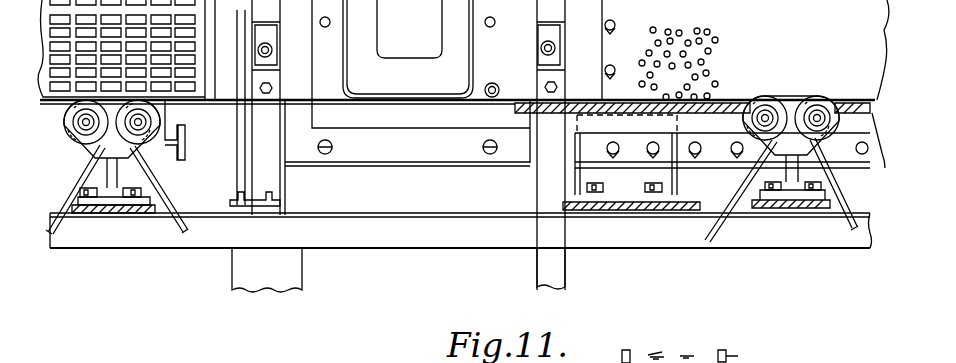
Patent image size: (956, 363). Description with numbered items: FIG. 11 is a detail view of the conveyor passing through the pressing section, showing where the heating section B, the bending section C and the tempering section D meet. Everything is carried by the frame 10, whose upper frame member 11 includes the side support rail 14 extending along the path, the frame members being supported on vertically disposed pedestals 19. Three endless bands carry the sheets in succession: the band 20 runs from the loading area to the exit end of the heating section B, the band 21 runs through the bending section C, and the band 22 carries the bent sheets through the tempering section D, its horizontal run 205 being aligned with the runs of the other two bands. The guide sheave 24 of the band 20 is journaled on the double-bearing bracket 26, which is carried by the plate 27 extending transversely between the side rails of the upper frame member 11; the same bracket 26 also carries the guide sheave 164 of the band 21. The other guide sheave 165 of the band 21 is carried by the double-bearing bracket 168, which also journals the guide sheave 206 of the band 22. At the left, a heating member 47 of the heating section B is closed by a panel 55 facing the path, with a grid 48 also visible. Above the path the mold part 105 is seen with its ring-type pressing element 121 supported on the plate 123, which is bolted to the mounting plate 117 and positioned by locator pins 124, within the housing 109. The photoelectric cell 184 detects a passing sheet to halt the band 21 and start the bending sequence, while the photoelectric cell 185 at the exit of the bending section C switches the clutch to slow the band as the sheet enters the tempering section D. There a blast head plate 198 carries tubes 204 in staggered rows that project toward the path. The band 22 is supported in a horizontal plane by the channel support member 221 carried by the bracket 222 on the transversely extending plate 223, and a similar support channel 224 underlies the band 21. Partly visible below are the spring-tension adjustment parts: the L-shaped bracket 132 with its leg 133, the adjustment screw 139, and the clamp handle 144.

The frame 10 is at (374, 262).
The upper frame member 11 is at (336, 255).
The side support rail 14 is at (408, 230).
The pedestal 19 is at (268, 262).
The band 20 is at (47, 232).
The band 21 is at (423, 97).
The band 22 is at (848, 218).
The guide sheave 24 is at (70, 172).
The double-bearing bracket 26 is at (123, 173).
The plate 27 is at (107, 213).
The heating member 47 is at (198, 147).
The grid panel 48 is at (185, 81).
The panel 55 is at (74, 143).
The mold part 105 is at (409, 29).
The housing 109 is at (268, 190).
The mounting plate 117 is at (372, 145).
The ring-type pressing element 121 is at (360, 48).
The plate 123 is at (418, 115).
The locator pin 124 is at (487, 95).
The guide sheave 164 is at (163, 180).
The guide sheave 165 is at (770, 99).
The double-bearing bracket 168 is at (778, 168).
The photoelectric cell 184 is at (279, 50).
The photoelectric cell 185 is at (540, 50).
The plate 198 is at (618, 47).
The tubes 204 is at (690, 55).
The horizontal run 205 is at (851, 87).
The guide sheave 206 is at (815, 98).
The channel support member 221 is at (873, 150).
The bracket 222 is at (678, 177).
The plate 223 is at (623, 208).
The support channel 224 is at (724, 110).
The L-shaped bracket 132 is at (633, 346).
The leg 133 is at (698, 362).
The adjustment screw 139 is at (658, 356).
The handle 144 is at (674, 355).
The heating section B is at (112, 201).
The bending section C is at (464, 238).
The tempering section D is at (778, 175).